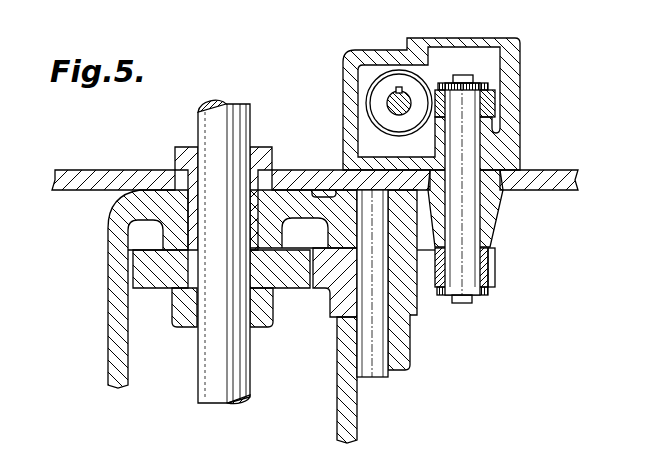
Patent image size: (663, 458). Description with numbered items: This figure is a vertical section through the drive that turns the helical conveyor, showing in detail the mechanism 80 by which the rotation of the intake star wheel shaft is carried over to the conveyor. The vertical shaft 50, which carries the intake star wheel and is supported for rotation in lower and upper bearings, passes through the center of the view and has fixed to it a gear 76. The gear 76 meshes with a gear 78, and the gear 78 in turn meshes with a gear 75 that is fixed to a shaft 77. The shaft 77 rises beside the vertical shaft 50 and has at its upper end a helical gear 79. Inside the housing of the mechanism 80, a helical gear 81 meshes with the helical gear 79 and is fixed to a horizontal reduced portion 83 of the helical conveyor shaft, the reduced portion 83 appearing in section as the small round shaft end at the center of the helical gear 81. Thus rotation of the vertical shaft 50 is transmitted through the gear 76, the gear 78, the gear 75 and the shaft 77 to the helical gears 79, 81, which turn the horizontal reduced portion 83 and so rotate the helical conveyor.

The vertical shaft 50 is at (210, 383).
The gear 75 is at (490, 268).
The gear 76 is at (266, 312).
The shaft 77 is at (467, 192).
The gear 78 is at (415, 308).
The helical gear 79 is at (497, 99).
The mechanism 80 is at (372, 42).
The helical gear 81 is at (404, 124).
The horizontal reduced portion of the helical conveyor shaft 83 is at (388, 103).